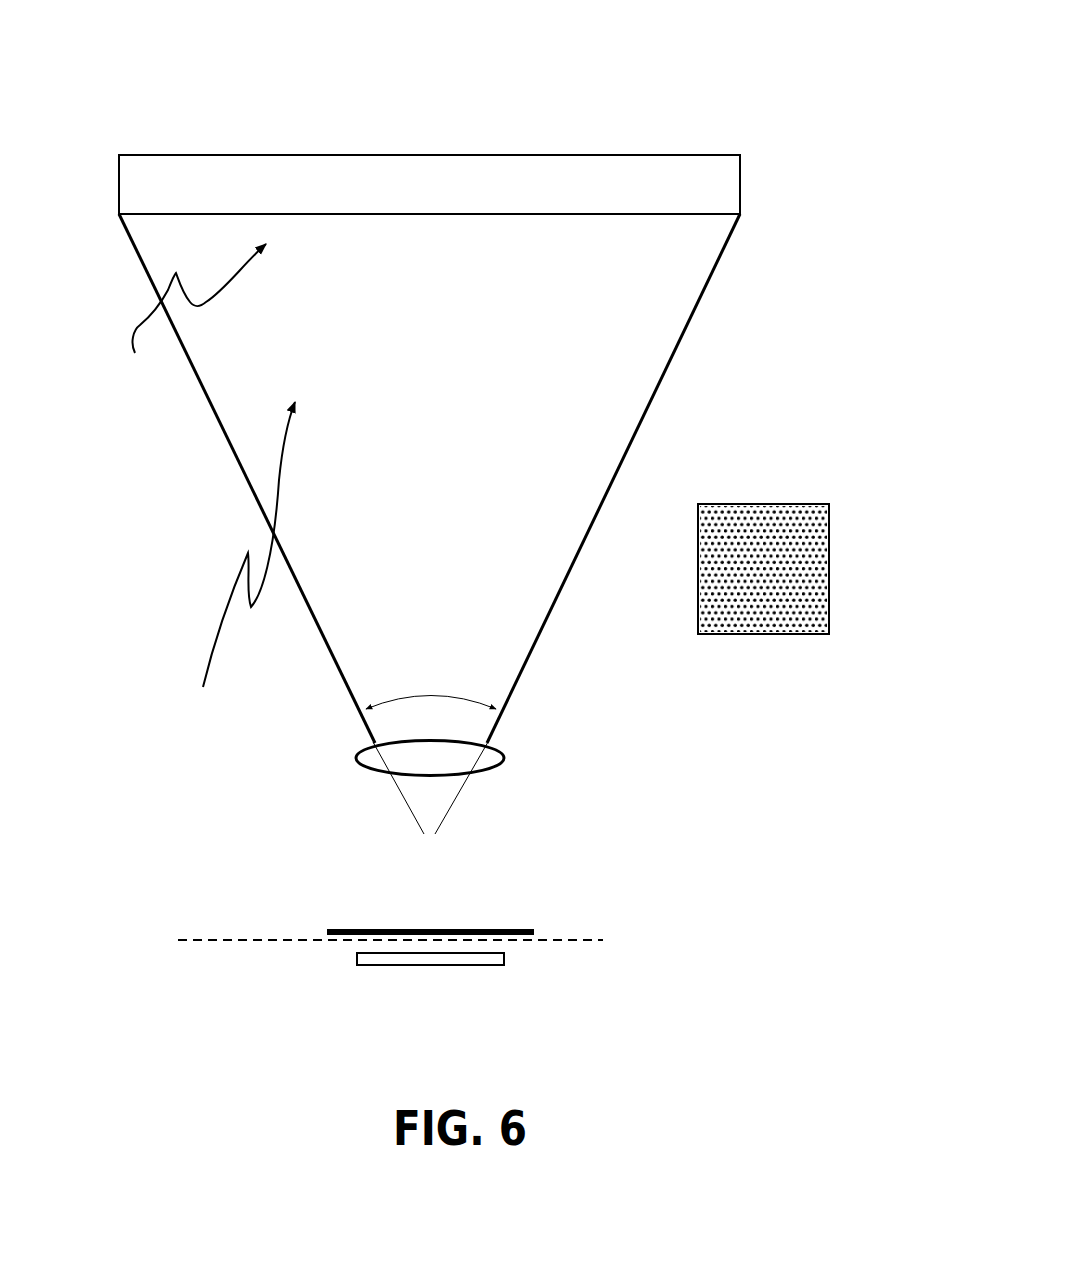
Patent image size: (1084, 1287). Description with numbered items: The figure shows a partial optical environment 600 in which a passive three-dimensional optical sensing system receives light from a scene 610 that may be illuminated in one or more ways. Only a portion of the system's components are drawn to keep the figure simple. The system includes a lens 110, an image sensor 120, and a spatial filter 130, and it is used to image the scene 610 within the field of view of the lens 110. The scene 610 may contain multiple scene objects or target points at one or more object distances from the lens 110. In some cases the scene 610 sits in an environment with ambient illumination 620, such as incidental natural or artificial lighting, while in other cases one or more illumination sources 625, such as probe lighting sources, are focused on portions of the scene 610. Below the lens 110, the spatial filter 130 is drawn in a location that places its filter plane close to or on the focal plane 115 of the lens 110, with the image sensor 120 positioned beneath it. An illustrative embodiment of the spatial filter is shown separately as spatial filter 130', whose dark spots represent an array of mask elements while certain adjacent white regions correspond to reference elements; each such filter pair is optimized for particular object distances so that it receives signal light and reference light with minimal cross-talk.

The partial optical environment 600 is at (196, 73).
The scene 610 is at (429, 184).
The ambient illumination 620 is at (162, 346).
The illumination source 625 is at (231, 574).
The lens 110 is at (362, 757).
The spatial filter 130' is at (821, 587).
The spatial filter 130 is at (369, 893).
The image sensor 120 is at (504, 965).
The focal plane 115 is at (205, 940).